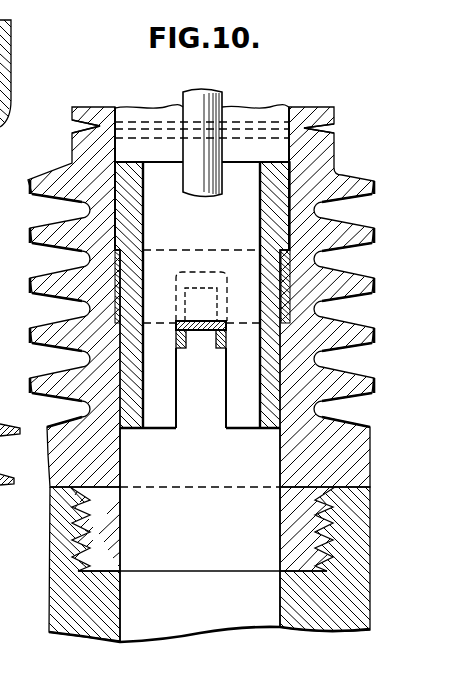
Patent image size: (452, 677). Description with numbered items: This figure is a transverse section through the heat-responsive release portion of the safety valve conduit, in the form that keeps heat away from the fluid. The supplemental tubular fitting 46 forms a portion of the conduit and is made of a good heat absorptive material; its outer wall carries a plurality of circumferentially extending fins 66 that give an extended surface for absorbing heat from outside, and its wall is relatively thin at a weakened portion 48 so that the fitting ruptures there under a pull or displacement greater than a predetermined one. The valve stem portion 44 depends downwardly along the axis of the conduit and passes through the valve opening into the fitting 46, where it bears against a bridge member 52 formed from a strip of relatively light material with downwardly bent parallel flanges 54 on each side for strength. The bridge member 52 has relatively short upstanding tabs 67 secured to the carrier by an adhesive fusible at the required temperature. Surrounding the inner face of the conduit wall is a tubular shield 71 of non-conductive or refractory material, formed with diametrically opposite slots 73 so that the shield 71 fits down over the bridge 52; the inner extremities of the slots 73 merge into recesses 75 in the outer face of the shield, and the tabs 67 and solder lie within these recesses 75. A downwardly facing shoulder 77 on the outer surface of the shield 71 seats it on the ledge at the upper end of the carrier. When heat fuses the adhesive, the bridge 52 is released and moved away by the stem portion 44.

The valve stem portion 44 is at (192, 148).
The supplemental tubular fitting 46 is at (311, 114).
The weakened portion 48 is at (96, 126).
The bridge member 52 is at (200, 320).
The flanges 54 is at (218, 349).
The fins 66 is at (64, 330).
The tabs 67 is at (207, 288).
The tubular shield 71 is at (130, 206).
The slots 73 is at (180, 416).
The recesses 75 is at (190, 271).
The shoulder 77 is at (87, 250).